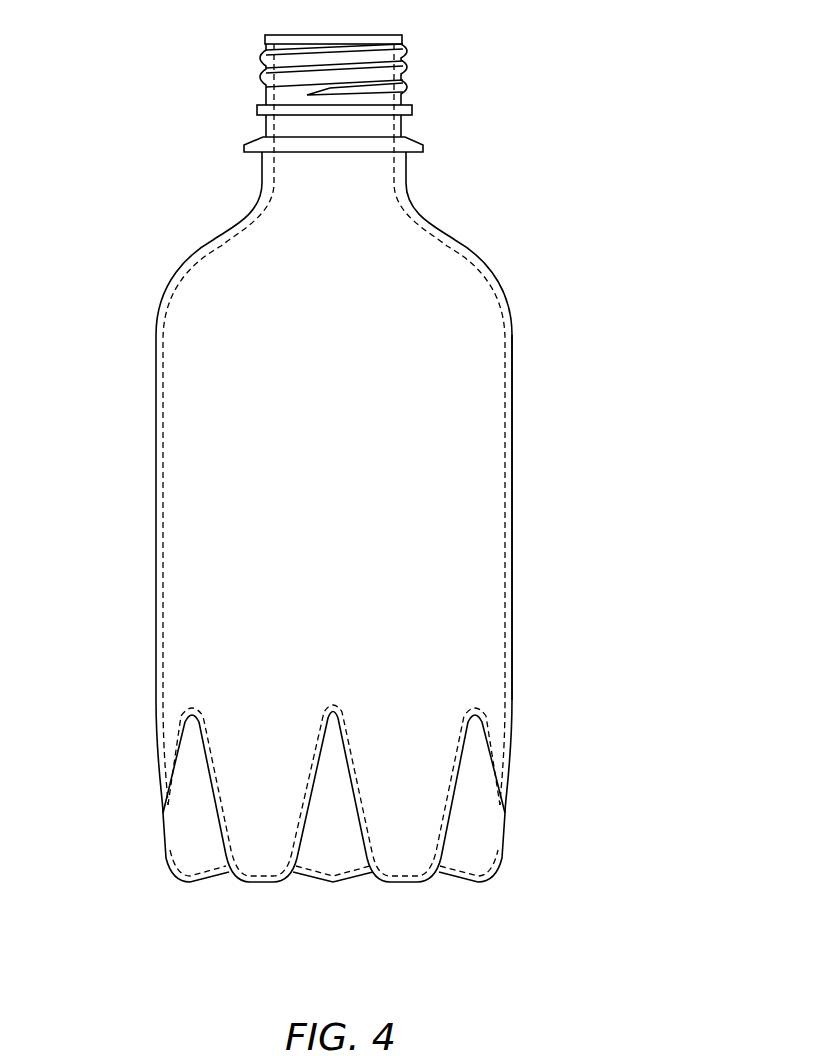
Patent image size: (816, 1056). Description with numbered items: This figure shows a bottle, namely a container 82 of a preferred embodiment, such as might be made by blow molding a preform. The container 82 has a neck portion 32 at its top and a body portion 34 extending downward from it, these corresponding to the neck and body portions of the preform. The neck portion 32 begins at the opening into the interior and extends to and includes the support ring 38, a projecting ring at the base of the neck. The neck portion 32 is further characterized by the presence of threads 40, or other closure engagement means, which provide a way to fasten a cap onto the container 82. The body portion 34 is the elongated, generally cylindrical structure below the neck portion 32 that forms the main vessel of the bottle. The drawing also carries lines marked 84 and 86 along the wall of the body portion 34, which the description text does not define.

The neck portion 32 is at (102, 33).
The body portion 34 is at (102, 153).
The support ring 38 is at (416, 138).
The threads 40 is at (416, 61).
The container 82 is at (535, 393).
The outer wall surface 84 is at (511, 527).
The inner wall surface 86 is at (498, 607).